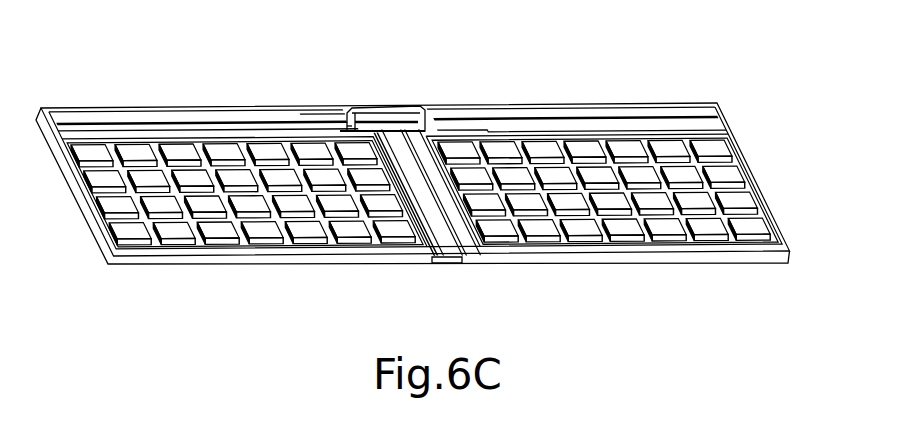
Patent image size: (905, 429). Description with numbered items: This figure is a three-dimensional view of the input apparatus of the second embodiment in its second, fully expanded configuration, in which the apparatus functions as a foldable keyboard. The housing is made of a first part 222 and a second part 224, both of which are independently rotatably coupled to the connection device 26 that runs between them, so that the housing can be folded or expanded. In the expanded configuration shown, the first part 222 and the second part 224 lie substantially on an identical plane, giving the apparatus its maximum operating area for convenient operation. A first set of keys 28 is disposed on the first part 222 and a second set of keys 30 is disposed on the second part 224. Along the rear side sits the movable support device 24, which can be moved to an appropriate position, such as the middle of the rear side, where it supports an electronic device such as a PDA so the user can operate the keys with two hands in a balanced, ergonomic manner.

The first part 222 is at (160, 121).
The second part 224 is at (574, 112).
The support device 24 is at (382, 112).
The connection device 26 is at (442, 246).
The first set of keys 28 is at (171, 228).
The second set of keys 30 is at (638, 217).